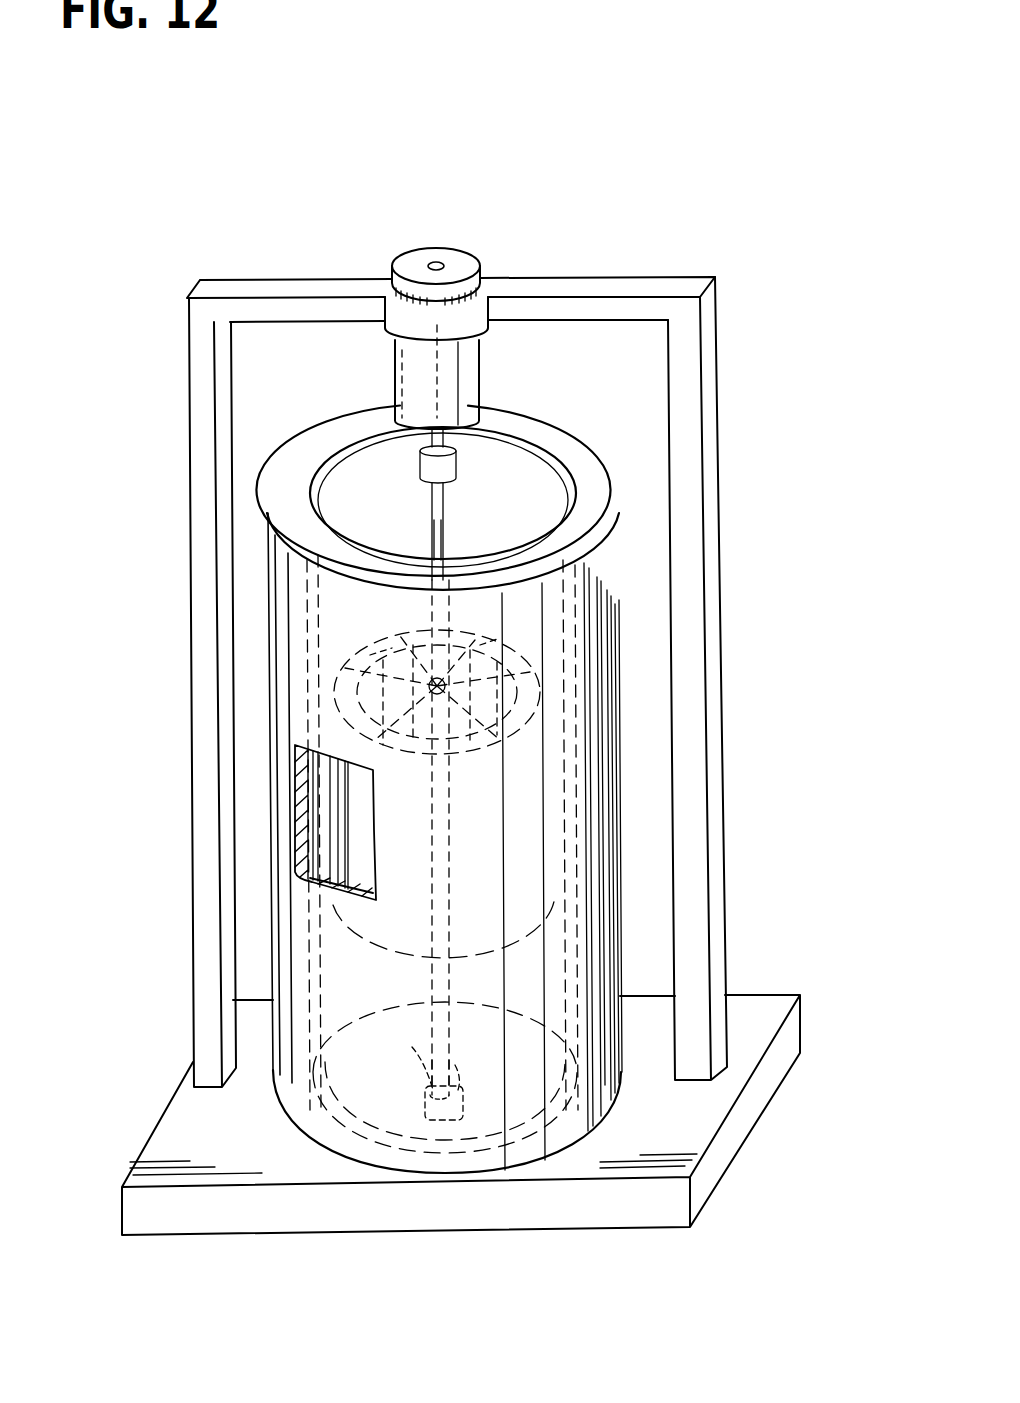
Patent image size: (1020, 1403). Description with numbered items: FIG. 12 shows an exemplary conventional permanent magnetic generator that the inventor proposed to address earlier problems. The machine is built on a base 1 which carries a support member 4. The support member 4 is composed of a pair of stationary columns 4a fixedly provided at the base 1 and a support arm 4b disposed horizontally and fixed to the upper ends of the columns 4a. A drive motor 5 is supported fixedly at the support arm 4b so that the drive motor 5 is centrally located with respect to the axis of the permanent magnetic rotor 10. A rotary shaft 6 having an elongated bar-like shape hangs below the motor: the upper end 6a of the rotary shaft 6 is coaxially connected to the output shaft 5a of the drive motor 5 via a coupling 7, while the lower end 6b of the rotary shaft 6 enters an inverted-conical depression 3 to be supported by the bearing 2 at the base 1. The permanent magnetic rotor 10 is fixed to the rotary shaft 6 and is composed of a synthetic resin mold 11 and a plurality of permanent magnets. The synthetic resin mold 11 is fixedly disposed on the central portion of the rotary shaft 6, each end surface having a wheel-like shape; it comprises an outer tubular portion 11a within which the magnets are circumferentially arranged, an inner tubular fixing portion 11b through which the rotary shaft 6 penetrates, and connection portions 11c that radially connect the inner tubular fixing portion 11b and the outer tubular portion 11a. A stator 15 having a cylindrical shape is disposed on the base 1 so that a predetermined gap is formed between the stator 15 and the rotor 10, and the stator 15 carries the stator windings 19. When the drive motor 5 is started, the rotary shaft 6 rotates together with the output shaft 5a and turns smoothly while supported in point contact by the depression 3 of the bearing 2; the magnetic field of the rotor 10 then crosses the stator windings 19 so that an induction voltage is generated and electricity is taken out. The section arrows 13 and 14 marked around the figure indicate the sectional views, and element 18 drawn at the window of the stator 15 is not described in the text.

The base 1 is at (748, 985).
The bearing 2 is at (423, 1105).
The inverted-conical depression 3 is at (420, 1070).
The support member 4 is at (467, 657).
The stationary columns 4a is at (203, 498).
The support arm 4b is at (552, 287).
The drive motor 5 is at (463, 267).
The output shaft 5a is at (455, 436).
The rotary shaft 6 is at (424, 501).
The upper end of the rotary shaft 6a is at (442, 535).
The lower end of the rotary shaft 6b is at (457, 1053).
The coupling 7 is at (422, 470).
The permanent magnetic rotor 10 is at (540, 656).
The synthetic resin mold 11 is at (489, 832).
The outer tubular portion 11a is at (590, 735).
The inner tubular fixing portion 11b is at (455, 750).
The connection portions 11c is at (385, 645).
The section line 13 is at (68, 1112).
The section line 14 is at (142, 810).
The stator 15 is at (364, 902).
The window frame 18 is at (327, 810).
The stator windings 19 is at (330, 830).